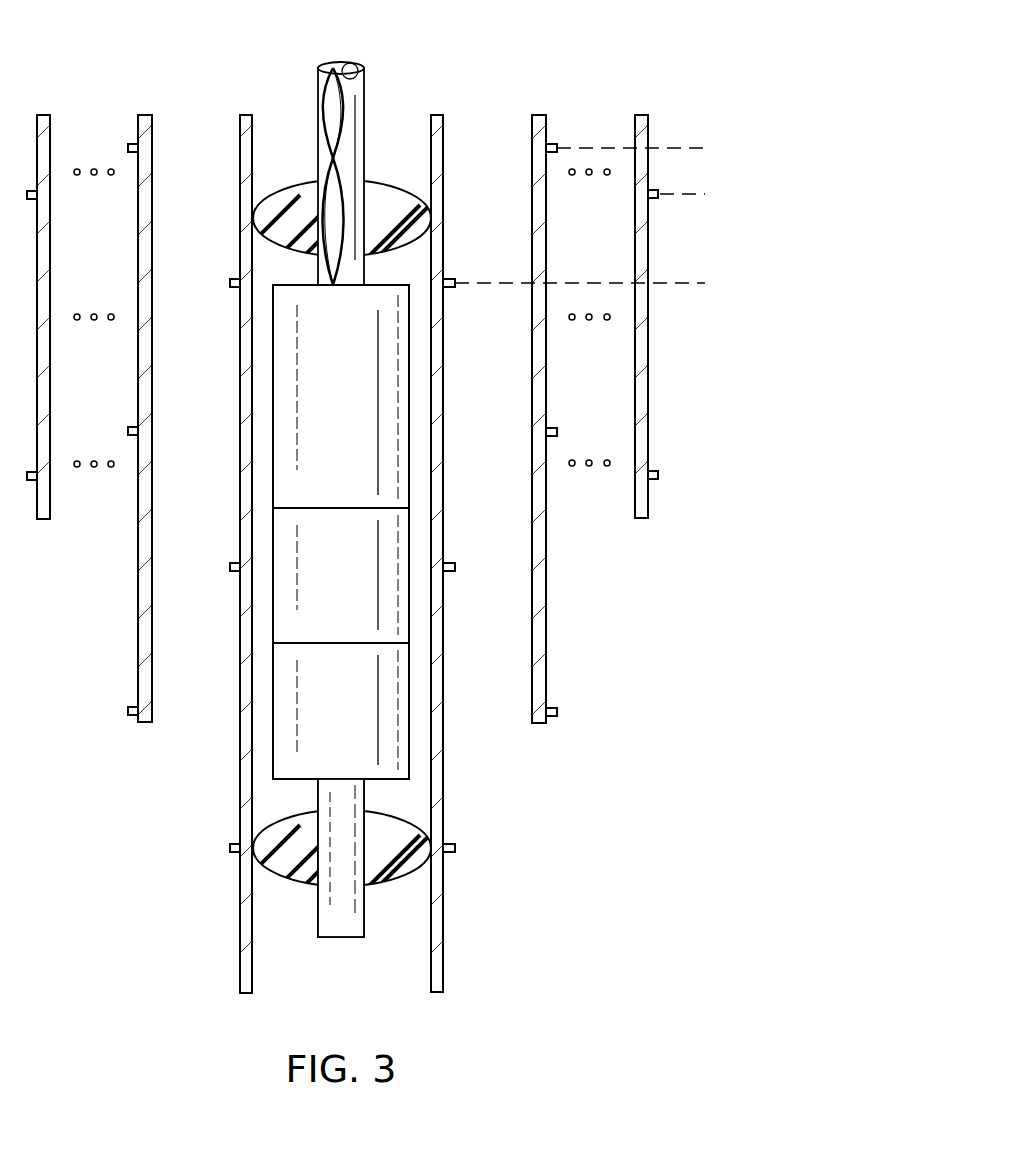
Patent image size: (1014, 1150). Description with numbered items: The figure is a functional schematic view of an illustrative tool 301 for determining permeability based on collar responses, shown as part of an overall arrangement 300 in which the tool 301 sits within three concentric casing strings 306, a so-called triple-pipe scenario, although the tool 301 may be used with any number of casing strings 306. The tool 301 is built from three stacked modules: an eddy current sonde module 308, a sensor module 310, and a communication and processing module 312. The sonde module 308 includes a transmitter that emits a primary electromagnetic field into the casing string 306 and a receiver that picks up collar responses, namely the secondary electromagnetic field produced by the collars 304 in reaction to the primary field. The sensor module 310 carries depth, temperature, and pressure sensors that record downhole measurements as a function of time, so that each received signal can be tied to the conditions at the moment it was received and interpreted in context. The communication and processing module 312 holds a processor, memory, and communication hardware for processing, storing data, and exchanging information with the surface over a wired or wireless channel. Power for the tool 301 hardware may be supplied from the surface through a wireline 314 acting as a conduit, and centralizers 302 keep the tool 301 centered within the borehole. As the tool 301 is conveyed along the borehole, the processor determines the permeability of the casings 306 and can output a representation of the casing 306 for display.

The downhole tool system 300 is at (118, 72).
The tool 301 is at (374, 958).
The centralizers 302 is at (381, 182).
The collars 304 is at (552, 146).
The casing string 306 is at (640, 520).
The eddy current sonde module 308 is at (320, 724).
The sensor module 310 is at (320, 589).
The communication and processing module 312 is at (320, 409).
The wireline 314 is at (348, 66).